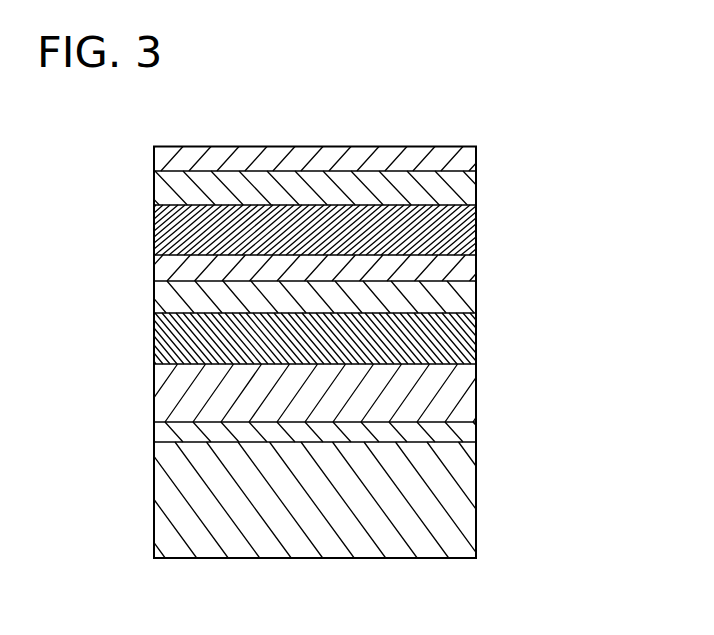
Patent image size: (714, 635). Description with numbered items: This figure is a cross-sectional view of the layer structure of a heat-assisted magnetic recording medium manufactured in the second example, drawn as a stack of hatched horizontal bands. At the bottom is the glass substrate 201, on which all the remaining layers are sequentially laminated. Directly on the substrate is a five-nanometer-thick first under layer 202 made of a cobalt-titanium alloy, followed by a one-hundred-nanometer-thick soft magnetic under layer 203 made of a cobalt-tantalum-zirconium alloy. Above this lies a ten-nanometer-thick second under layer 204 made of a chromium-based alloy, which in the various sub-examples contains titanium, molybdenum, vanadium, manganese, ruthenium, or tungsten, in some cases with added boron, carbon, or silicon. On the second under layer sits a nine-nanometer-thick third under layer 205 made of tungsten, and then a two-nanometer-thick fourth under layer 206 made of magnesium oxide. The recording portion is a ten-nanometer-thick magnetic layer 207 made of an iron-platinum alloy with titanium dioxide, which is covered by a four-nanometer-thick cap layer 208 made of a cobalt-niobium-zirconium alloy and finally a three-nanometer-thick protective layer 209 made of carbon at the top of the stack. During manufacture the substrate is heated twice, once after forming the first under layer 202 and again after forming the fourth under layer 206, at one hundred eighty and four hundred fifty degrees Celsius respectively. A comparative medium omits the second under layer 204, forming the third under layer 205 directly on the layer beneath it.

The glass substrate 201 is at (471, 501).
The first under layer 202 is at (471, 433).
The soft magnetic under layer 203 is at (471, 404).
The second under layer 204 is at (471, 340).
The third under layer 205 is at (471, 299).
The fourth under layer 206 is at (471, 268).
The magnetic layer 207 is at (471, 231).
The cap layer 208 is at (471, 189).
The protective layer 209 is at (471, 159).